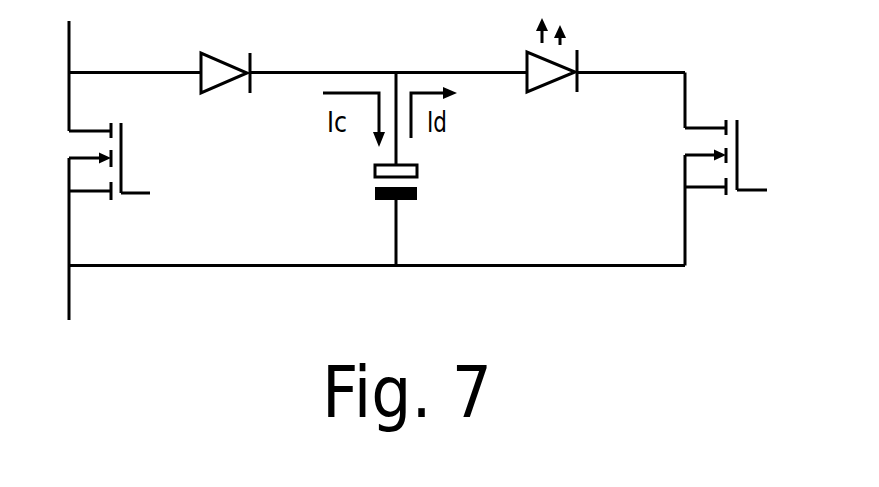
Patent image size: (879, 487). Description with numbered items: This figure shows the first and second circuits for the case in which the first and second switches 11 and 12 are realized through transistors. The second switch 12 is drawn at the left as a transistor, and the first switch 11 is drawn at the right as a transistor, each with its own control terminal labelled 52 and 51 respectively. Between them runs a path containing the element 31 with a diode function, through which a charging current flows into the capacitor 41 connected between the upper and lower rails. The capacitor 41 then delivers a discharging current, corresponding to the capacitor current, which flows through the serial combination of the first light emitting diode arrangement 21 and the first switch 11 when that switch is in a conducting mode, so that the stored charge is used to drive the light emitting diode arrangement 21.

The first switch 11 is at (690, 157).
The second switch 12 is at (72, 161).
The first light emitting diode arrangement 21 is at (552, 70).
The element with a diode function 31 is at (225, 91).
The capacitor 41 is at (383, 202).
The gate drive signal of second transistor 51 is at (778, 185).
The gate drive signal of first transistor 52 is at (162, 188).